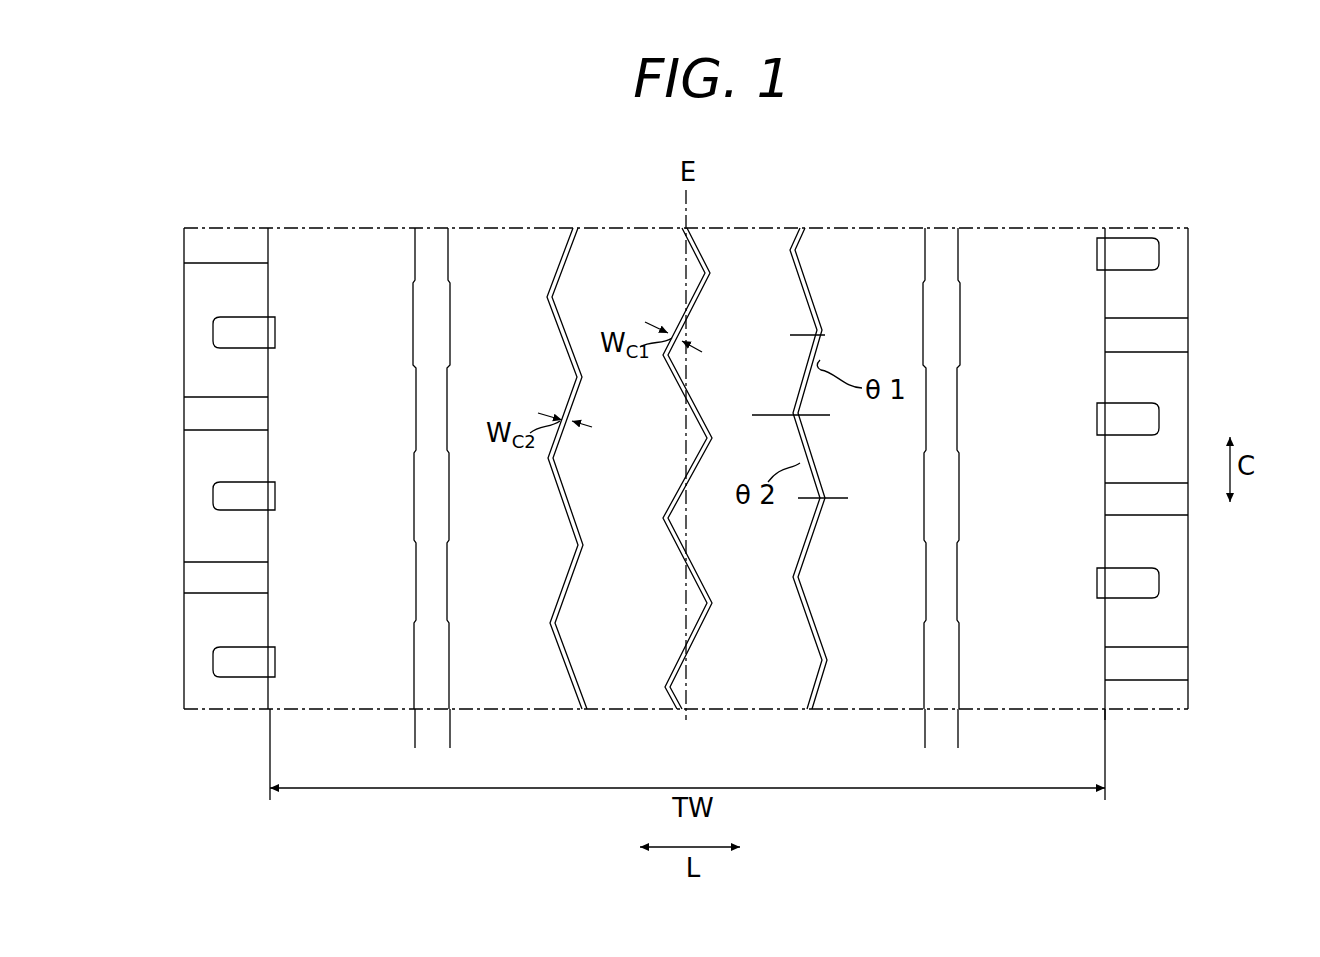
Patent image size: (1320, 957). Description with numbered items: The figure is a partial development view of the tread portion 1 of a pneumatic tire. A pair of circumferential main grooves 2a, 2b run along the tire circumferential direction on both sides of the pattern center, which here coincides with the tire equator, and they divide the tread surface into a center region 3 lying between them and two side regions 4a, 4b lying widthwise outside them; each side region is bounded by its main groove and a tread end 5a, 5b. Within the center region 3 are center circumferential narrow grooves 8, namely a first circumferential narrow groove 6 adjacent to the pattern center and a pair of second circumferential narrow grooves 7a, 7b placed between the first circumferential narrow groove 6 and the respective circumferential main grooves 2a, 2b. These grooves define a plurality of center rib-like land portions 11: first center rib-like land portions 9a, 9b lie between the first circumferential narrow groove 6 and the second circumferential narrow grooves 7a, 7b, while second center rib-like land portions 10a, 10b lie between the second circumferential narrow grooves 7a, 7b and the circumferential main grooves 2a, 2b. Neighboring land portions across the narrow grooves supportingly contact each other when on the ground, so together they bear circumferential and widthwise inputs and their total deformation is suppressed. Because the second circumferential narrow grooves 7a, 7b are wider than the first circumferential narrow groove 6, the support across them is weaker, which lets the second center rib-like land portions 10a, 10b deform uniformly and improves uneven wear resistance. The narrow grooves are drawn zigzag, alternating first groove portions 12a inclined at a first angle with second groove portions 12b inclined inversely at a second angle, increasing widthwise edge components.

The tread portion 1 is at (1118, 142).
The circumferential main groove 2a is at (431, 238).
The circumferential main groove 2b is at (940, 238).
The center region 3 is at (450, 738).
The side region 4a is at (270, 738).
The side region 4b is at (958, 738).
The tread end 5a is at (268, 294).
The tread end 5b is at (1105, 294).
The first circumferential narrow groove 6 is at (740, 590).
The second circumferential narrow groove 7a is at (575, 556).
The second circumferential narrow groove 7b is at (810, 622).
The center circumferential narrow grooves 8 is at (872, 535).
The first center rib-like land portion 9a is at (603, 593).
The first center rib-like land portion 9b is at (727, 620).
The second center rib-like land portion 10a is at (497, 557).
The second center rib-like land portion 10b is at (840, 692).
The center rib-like land portions 11 is at (350, 542).
The first groove portion 12a is at (804, 339).
The second groove portion 12b is at (817, 418).